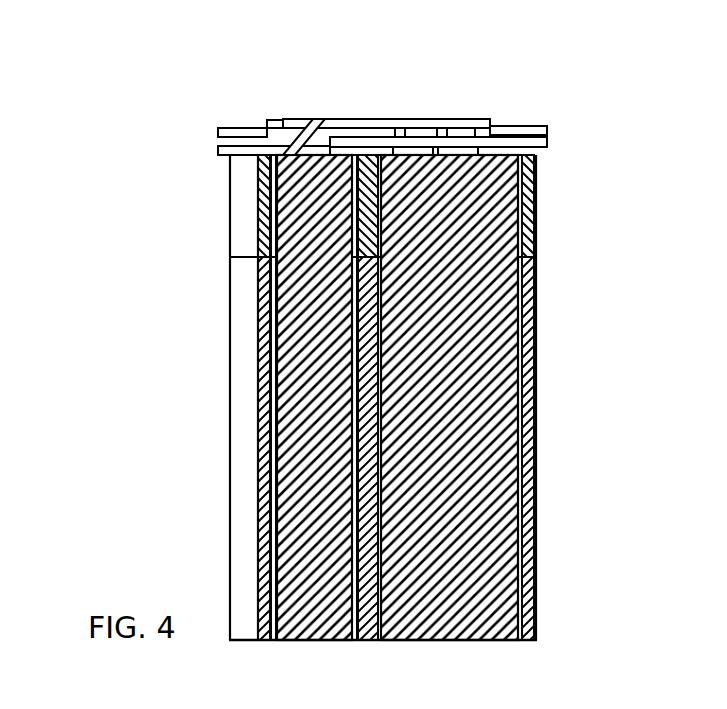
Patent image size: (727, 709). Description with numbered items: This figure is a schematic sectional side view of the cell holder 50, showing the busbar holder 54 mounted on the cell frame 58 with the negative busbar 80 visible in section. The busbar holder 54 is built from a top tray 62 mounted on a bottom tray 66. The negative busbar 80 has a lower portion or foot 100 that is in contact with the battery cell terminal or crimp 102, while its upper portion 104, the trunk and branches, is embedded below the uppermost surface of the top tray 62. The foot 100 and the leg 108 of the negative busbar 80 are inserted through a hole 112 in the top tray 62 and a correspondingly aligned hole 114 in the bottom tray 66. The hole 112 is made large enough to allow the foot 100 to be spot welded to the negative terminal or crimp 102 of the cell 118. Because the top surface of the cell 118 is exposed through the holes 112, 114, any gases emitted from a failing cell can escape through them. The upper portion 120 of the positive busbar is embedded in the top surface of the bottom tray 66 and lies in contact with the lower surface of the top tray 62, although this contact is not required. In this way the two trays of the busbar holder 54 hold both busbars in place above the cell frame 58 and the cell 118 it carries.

The cell holder 50 is at (85, 89).
The busbar holder 54 is at (146, 120).
The cell frame 58 is at (537, 341).
The top tray 62 is at (548, 129).
The bottom tray 66 is at (220, 153).
The negative busbar 80 is at (285, 147).
The foot 100 is at (280, 150).
The crimp 102 is at (325, 152).
The upper portion 104 is at (338, 146).
The leg 108 is at (299, 128).
The hole 112 is at (297, 124).
The hole 114 is at (290, 146).
The cell 118 is at (313, 641).
The upper portion 120 is at (418, 137).